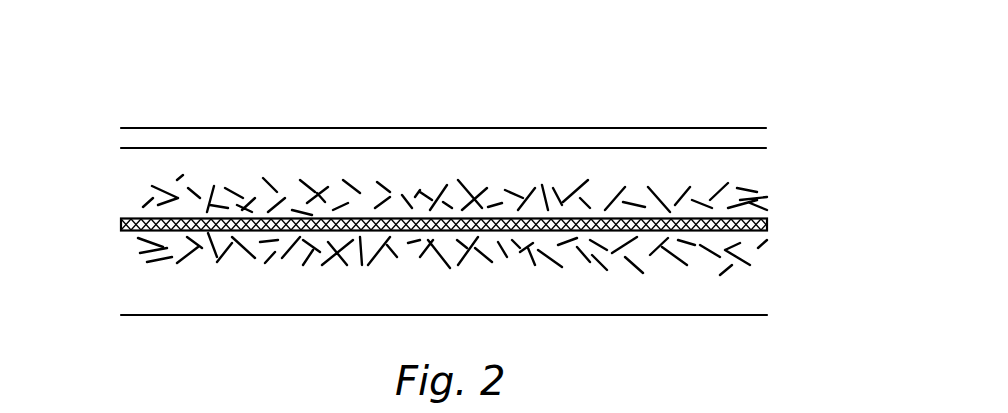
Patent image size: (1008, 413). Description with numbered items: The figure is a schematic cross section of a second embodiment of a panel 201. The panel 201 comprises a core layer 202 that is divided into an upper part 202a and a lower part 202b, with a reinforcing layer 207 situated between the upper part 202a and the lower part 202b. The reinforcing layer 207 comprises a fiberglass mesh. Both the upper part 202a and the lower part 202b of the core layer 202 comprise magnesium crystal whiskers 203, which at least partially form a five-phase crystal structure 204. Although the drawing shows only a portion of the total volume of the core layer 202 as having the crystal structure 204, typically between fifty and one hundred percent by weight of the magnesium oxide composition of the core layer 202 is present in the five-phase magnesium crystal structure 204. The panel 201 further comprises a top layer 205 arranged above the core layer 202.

The panel 201 is at (117, 96).
The core layer 202 is at (764, 281).
The upper part of the core layer 202a is at (665, 178).
The lower part of the core layer 202b is at (657, 292).
The magnesium crystal whiskers 203 is at (353, 188).
The 5-phase crystal structure 204 is at (129, 190).
The top layer 205 is at (765, 138).
The reinforcing layer 207 is at (767, 225).